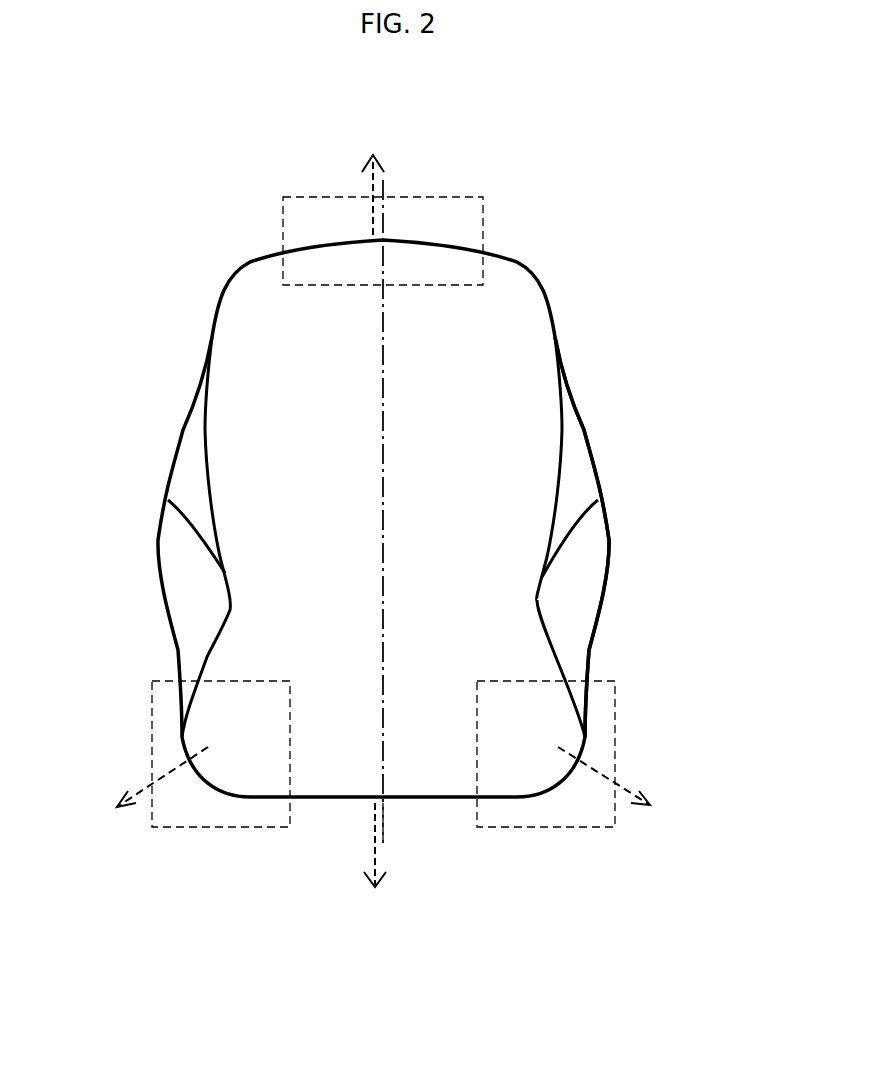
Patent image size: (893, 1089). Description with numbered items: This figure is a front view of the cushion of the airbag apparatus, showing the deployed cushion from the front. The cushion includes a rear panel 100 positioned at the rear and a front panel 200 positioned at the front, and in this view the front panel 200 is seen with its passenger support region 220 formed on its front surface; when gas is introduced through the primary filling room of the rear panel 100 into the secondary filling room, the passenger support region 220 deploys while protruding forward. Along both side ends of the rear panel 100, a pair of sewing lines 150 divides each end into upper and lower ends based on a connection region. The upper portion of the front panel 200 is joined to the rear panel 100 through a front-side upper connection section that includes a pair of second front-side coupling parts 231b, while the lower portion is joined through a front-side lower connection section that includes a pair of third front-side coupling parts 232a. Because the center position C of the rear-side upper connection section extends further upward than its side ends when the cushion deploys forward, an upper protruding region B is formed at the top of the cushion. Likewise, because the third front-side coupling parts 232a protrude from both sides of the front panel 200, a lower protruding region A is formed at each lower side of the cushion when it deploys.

The rear panel 100 is at (593, 483).
The sewing lines 150 is at (193, 527).
The front panel 200 is at (330, 417).
The passenger support region 220 is at (402, 440).
The second front-side coupling parts 231b is at (560, 433).
The third front-side coupling parts 232a is at (553, 640).
The lower protruding region A is at (212, 828).
The upper protruding region B is at (440, 197).
The center position C is at (385, 820).